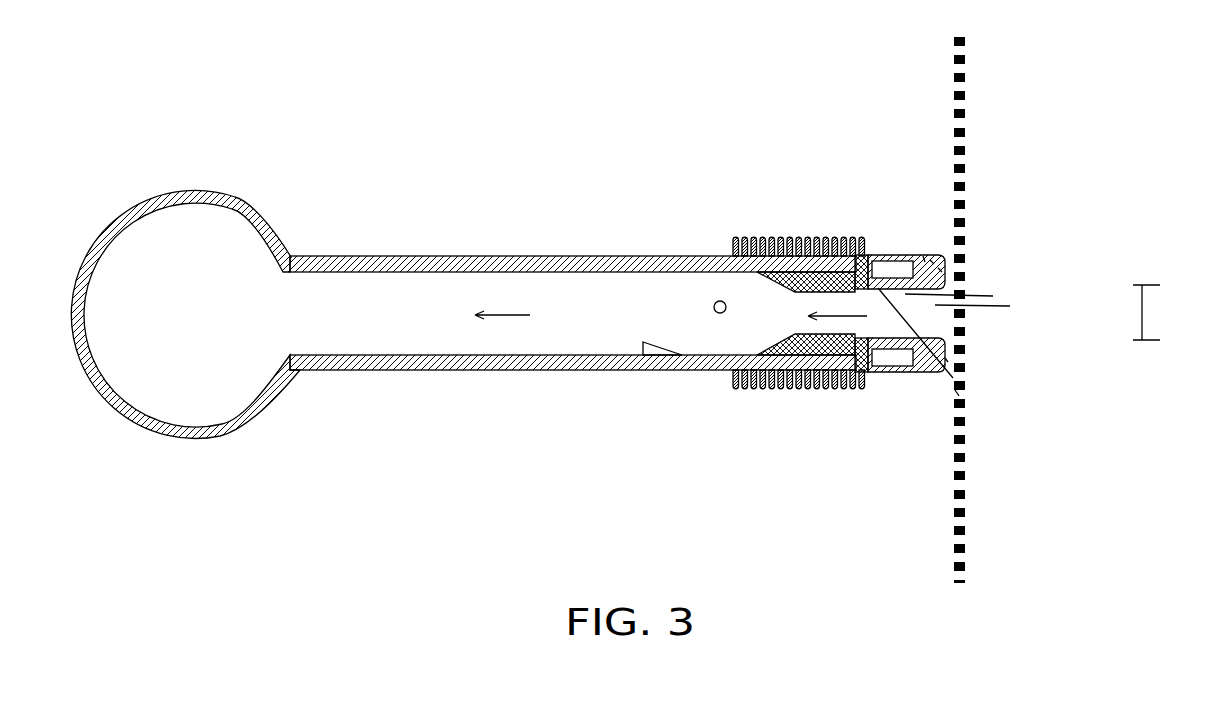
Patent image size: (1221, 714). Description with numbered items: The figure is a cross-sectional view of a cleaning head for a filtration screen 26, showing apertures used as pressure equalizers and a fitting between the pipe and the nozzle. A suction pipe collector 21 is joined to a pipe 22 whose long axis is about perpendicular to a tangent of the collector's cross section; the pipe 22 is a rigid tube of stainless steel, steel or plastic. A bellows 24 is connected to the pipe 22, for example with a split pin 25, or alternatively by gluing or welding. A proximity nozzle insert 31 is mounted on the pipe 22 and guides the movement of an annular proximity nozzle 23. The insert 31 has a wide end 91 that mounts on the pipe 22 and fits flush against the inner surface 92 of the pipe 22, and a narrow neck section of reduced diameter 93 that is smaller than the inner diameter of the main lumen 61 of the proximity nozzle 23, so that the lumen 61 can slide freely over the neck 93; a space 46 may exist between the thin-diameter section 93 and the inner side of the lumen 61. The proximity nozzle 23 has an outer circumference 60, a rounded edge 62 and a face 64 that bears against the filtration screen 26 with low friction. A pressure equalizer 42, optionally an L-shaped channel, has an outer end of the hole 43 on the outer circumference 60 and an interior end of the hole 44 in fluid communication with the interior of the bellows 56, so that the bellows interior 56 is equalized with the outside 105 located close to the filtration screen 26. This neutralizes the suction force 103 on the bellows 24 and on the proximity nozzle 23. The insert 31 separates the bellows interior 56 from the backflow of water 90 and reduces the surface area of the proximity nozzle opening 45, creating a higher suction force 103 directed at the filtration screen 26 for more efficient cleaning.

The suction pipe collector 21 is at (185, 268).
The pipe 22 is at (330, 258).
The proximity nozzle 23 is at (940, 270).
The bellows 24 is at (750, 240).
The split pin 25 is at (716, 296).
The filtration screen 26 is at (957, 468).
The proximity nozzle insert 31 is at (818, 238).
The pressure equalizer 42 is at (885, 257).
The outer end of hole 43 is at (912, 255).
The interior end of hole 44 is at (957, 393).
The proximity nozzle opening 45 is at (1164, 312).
The space 46 is at (993, 296).
The interior of bellows 56 is at (793, 390).
The outer circumference 60 is at (923, 255).
The main lumen 61 is at (930, 333).
The rounded edge 62 is at (932, 262).
The proximity nozzle face 64 is at (948, 360).
The backflow of water 90 is at (482, 324).
The wide end 91 is at (780, 350).
The inner surface of pipe 92 is at (645, 342).
The reduced diameter neck section 93 is at (1010, 306).
The suction force 103 is at (812, 326).
The outside 105 is at (915, 348).